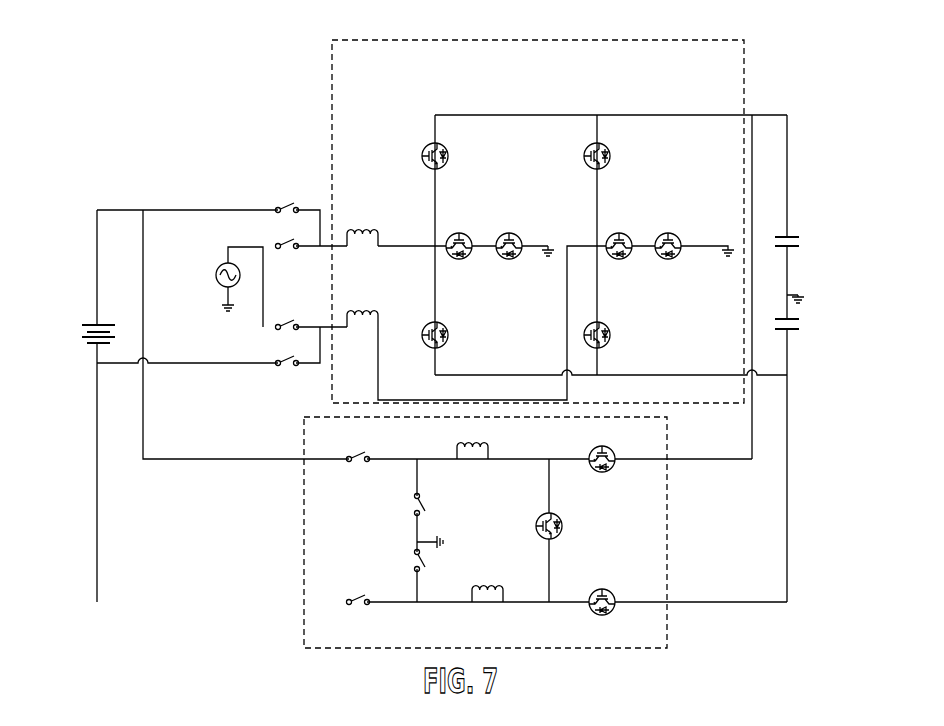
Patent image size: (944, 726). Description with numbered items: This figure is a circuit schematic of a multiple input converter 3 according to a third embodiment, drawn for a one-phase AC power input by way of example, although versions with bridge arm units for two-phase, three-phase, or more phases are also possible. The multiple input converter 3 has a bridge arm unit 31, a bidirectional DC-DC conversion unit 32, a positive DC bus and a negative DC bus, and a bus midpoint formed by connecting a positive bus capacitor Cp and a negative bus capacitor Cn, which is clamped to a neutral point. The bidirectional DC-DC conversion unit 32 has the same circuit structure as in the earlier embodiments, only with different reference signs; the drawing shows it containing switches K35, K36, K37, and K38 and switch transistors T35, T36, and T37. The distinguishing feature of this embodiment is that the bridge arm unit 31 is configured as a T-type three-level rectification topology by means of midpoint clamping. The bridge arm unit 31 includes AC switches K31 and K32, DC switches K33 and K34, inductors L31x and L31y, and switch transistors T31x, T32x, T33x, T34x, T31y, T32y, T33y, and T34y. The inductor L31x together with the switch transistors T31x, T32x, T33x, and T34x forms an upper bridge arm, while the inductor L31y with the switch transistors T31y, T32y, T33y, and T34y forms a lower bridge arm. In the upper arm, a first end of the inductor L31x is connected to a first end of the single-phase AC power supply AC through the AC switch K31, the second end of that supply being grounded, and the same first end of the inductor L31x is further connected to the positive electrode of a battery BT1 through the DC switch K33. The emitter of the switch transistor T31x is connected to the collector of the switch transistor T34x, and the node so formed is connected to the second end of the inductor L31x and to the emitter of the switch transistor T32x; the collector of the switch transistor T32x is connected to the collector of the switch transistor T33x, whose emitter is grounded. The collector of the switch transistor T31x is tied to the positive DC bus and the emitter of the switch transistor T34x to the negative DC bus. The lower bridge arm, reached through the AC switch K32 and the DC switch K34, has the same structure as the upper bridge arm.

The multiple input converter 3 is at (103, 76).
The bridge arm unit 31 is at (332, 100).
The bidirectional DC-DC conversion unit 32 is at (667, 632).
The battery BT1 is at (84, 335).
The single-phase AC power supply AC is at (216, 275).
The AC switch K31 is at (287, 257).
The AC switch K32 is at (287, 338).
The DC switch K33 is at (287, 220).
The DC switch K34 is at (287, 374).
The switch K35 is at (358, 470).
The switch K36 is at (358, 612).
The switch K37 is at (438, 507).
The switch K38 is at (438, 565).
The inductor L31x is at (363, 219).
The inductor L31y is at (362, 302).
The switch transistor T31x is at (455, 156).
The switch transistor T31y is at (615, 156).
The switch transistor T32x is at (462, 261).
The switch transistor T33x is at (512, 261).
The switch transistor T32y is at (622, 261).
The switch transistor T33y is at (672, 261).
The switch transistor T34x is at (455, 335).
The switch transistor T34y is at (615, 335).
The transistor T35 is at (604, 472).
The transistor T36 is at (565, 525).
The transistor T37 is at (601, 588).
The positive bus capacitor Cp is at (791, 225).
The negative bus capacitor Cn is at (792, 336).